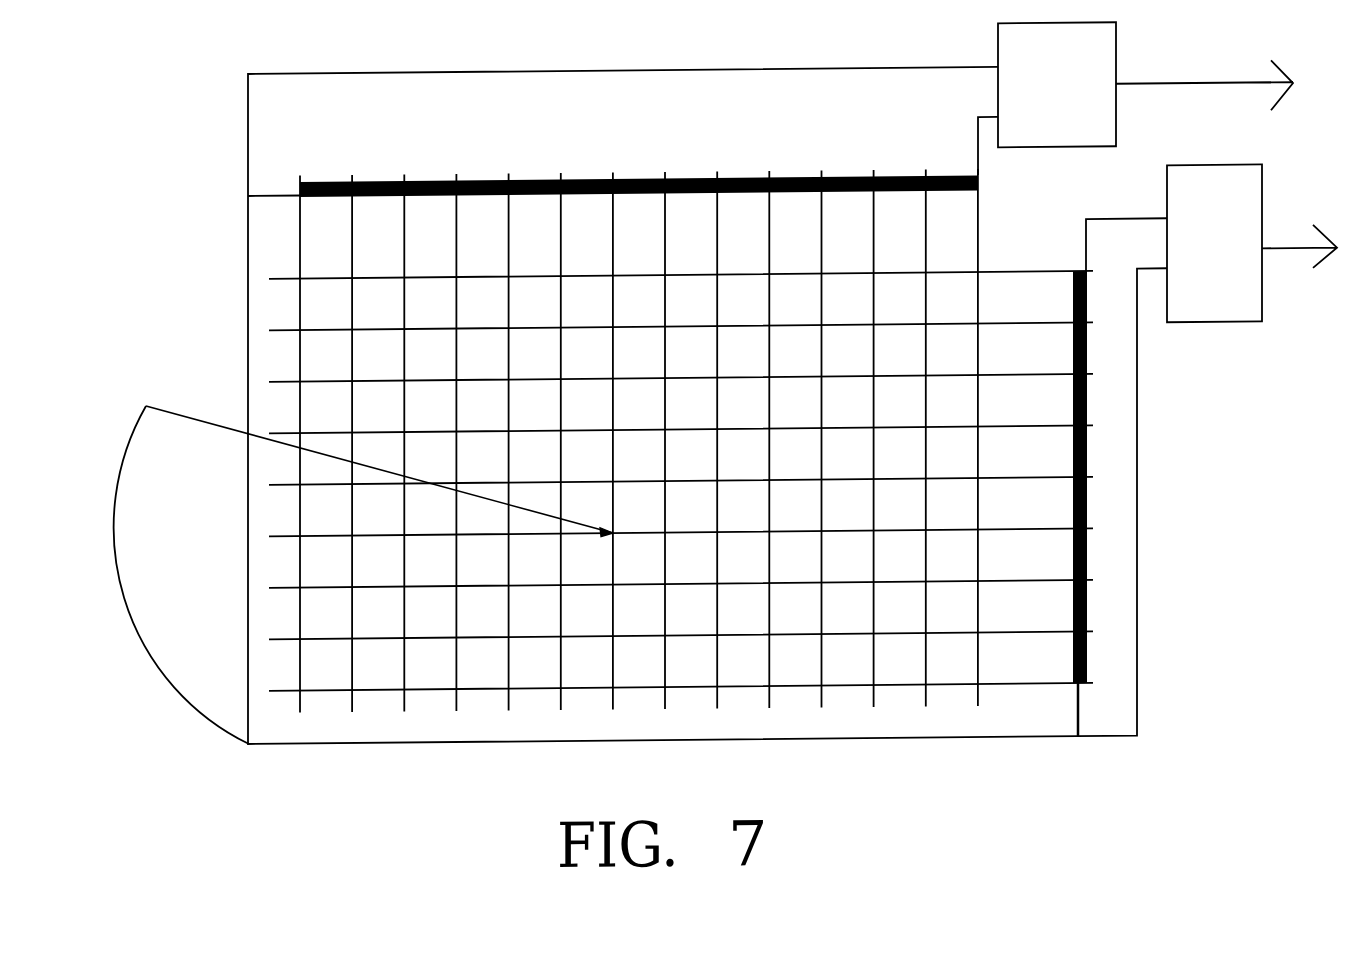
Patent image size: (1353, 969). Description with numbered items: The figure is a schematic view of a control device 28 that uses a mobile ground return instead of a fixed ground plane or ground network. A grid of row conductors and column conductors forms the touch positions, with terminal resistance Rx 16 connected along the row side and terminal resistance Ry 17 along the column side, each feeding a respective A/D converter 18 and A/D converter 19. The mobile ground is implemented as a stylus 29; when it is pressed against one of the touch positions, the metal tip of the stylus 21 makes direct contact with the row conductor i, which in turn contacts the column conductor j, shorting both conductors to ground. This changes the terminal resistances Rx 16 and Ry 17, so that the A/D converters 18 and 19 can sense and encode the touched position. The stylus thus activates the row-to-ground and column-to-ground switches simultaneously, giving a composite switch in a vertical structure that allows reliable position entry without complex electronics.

The terminal resistance Rx 16 is at (384, 164).
The terminal resistance Ry 17 is at (1107, 618).
The A/D converter 18 is at (1115, 66).
The A/D converter 19 is at (1203, 329).
The metal tip of the stylus 21 is at (606, 542).
The control device 28 is at (213, 319).
The stylus 29 is at (216, 427).